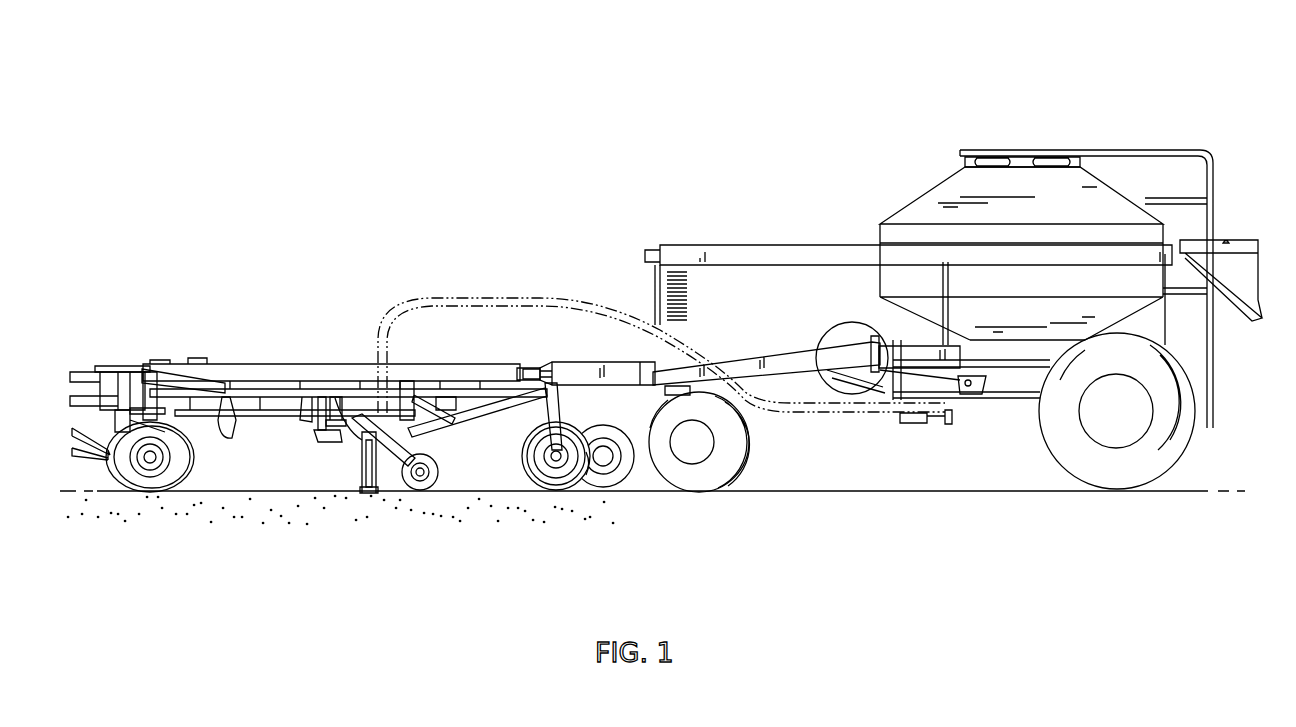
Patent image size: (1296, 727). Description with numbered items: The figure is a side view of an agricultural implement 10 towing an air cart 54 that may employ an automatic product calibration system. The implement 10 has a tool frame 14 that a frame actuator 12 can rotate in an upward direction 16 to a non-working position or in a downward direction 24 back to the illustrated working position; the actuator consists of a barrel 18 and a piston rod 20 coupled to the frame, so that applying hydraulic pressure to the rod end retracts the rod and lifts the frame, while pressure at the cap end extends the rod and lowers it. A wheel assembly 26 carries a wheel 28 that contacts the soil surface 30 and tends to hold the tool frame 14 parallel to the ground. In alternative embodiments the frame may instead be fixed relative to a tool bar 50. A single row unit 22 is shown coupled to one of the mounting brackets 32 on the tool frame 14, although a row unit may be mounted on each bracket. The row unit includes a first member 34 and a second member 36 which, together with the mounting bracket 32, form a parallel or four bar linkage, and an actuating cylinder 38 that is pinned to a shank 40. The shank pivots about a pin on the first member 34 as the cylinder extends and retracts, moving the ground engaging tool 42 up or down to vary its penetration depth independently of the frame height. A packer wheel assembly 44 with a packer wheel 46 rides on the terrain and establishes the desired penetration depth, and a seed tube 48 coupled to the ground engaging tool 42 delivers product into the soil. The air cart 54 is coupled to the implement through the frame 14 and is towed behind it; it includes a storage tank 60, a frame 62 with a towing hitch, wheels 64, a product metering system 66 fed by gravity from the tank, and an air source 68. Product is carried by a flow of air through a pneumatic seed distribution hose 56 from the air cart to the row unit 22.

The implement 10 is at (363, 428).
The frame actuator 12 is at (188, 357).
The tool frame 14 is at (357, 387).
The upward direction 16 is at (121, 357).
The barrel 18 is at (207, 378).
The piston rod 20 is at (262, 385).
The row unit 22 is at (406, 492).
The downward direction 24 is at (140, 352).
The wheel assembly 26 is at (478, 383).
The wheel 28 is at (563, 418).
The soil surface 30 is at (470, 480).
The mounting bracket 32 is at (307, 428).
The first member 34 is at (337, 437).
The second member 36 is at (338, 413).
The actuating cylinder 38 is at (317, 440).
The shank 40 is at (382, 467).
The ground engaging tool 42 is at (357, 495).
The packer wheel assembly 44 is at (444, 407).
The packer wheel 46 is at (438, 466).
The seed tube 48 is at (378, 493).
The tool bar 50 is at (123, 393).
The air cart 54 is at (953, 299).
The pneumatic seed distribution hose 56 is at (572, 297).
The storage tank 60 is at (948, 190).
The frame 62 is at (757, 352).
The wheels 64 is at (760, 448).
The product metering system 66 is at (980, 392).
The air source 68 is at (832, 333).